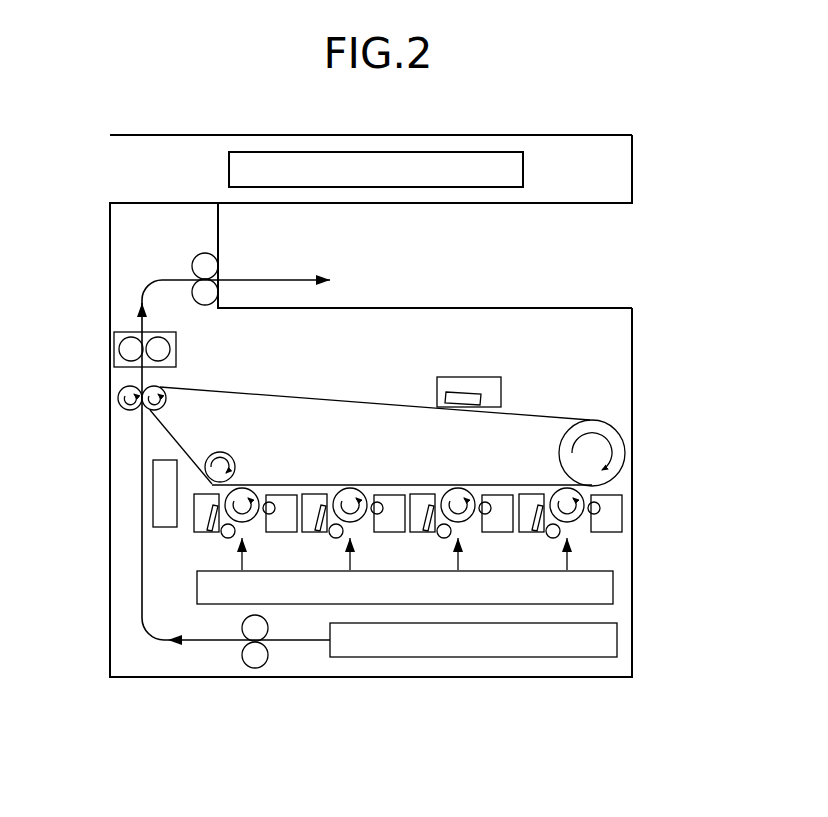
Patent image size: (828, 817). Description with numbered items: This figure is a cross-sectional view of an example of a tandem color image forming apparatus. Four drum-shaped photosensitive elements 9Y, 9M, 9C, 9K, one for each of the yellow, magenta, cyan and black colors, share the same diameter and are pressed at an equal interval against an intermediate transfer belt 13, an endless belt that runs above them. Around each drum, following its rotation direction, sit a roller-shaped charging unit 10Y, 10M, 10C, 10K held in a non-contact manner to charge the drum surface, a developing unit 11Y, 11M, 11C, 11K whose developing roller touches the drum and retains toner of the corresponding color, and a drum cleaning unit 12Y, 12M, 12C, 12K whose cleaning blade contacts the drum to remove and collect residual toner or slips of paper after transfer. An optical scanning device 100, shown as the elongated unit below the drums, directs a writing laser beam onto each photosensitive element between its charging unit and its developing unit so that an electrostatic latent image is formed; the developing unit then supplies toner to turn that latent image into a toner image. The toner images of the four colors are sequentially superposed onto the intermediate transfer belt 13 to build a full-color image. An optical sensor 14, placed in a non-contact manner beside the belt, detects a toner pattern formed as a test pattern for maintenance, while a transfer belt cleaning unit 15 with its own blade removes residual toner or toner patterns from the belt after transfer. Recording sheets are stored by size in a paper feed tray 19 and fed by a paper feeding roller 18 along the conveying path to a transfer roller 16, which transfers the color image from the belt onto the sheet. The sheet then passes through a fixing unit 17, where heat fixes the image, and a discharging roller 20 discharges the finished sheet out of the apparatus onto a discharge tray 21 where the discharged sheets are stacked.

The photosensitive element 9K is at (250, 489).
The photosensitive element 9M is at (342, 492).
The photosensitive element 9C is at (452, 492).
The photosensitive element 9Y is at (556, 492).
The charging unit 10K is at (228, 538).
The charging unit 10M is at (336, 538).
The charging unit 10C is at (444, 538).
The charging unit 10Y is at (553, 538).
The developing unit 11K is at (198, 534).
The developing unit 11M is at (306, 534).
The developing unit 11C is at (414, 534).
The developing unit 11Y is at (523, 534).
The drum cleaning unit 12K is at (290, 496).
The drum cleaning unit 12M is at (390, 496).
The drum cleaning unit 12C is at (498, 496).
The drum cleaning unit 12Y is at (605, 533).
The intermediate transfer belt 13 is at (547, 410).
The optical sensor 14 is at (161, 496).
The transfer belt cleaning unit 15 is at (473, 388).
The transfer roller 16 is at (118, 402).
The fixing unit 17 is at (124, 350).
The paper feeding roller 18 is at (255, 660).
The paper feed tray 19 is at (443, 659).
The discharging roller 20 is at (208, 268).
The discharge tray 21 is at (384, 307).
The optical scanning device 100 is at (608, 591).